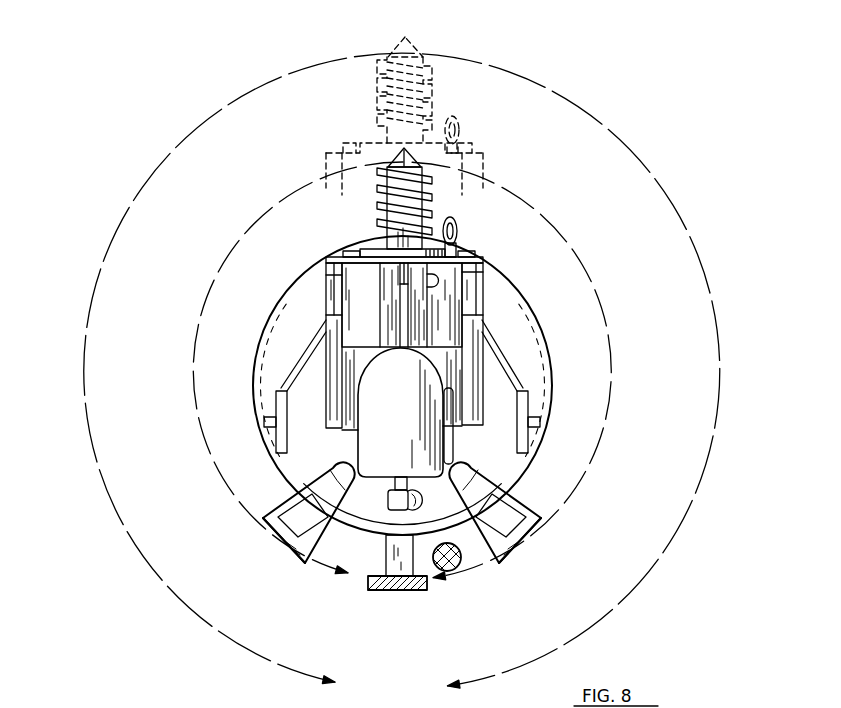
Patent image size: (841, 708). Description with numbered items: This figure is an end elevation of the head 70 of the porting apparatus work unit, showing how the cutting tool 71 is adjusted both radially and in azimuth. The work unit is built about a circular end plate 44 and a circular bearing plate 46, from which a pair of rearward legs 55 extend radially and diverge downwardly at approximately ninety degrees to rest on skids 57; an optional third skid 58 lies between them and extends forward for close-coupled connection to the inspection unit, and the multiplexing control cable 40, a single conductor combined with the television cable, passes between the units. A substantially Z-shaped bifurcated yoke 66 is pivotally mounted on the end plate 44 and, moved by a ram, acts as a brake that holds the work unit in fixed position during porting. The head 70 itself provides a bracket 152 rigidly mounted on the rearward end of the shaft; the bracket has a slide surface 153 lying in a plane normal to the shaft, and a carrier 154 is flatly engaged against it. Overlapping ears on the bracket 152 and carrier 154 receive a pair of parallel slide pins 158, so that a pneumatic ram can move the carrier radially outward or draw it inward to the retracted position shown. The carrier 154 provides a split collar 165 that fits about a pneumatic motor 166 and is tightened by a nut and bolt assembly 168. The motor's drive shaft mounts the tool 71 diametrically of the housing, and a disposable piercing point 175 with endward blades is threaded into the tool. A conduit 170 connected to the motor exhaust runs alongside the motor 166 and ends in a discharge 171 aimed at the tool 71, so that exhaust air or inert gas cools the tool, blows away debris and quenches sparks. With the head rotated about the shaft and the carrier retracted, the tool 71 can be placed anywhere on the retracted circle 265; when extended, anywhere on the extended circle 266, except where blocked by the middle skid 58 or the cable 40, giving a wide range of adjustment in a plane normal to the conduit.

The multiplexing control cable 40 is at (462, 556).
The circular end plate 44 is at (378, 504).
The circular bearing plate 46 is at (518, 317).
The rearward legs 55 is at (300, 503).
The skids 57 is at (280, 536).
The third skid 58 is at (401, 592).
The Z-shaped bifurcated yoke 66 is at (520, 350).
The head 70 is at (496, 256).
The tool 71 is at (453, 221).
The bracket 152 is at (330, 302).
The slide surface 153 is at (335, 287).
The carrier 154 is at (377, 311).
The slide pins 158 is at (352, 256).
The split collar 165 is at (413, 317).
The pneumatic motor 166 is at (391, 436).
The nut and bolt assembly 168 is at (437, 279).
The conduit 170 is at (451, 430).
The discharge 171 is at (458, 238).
The disposable piercing point 175 is at (400, 148).
The retracted circle 265 is at (611, 380).
The extended circle 266 is at (721, 380).